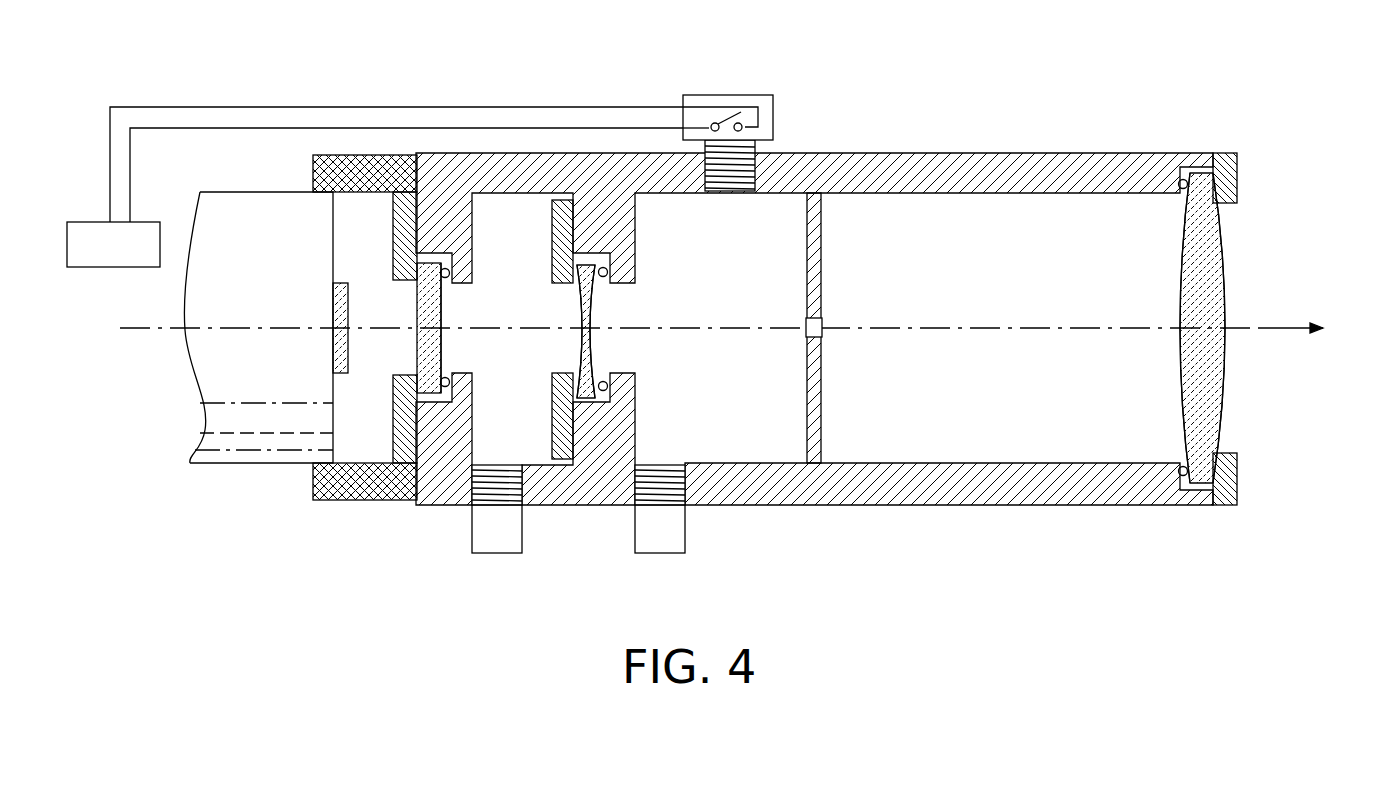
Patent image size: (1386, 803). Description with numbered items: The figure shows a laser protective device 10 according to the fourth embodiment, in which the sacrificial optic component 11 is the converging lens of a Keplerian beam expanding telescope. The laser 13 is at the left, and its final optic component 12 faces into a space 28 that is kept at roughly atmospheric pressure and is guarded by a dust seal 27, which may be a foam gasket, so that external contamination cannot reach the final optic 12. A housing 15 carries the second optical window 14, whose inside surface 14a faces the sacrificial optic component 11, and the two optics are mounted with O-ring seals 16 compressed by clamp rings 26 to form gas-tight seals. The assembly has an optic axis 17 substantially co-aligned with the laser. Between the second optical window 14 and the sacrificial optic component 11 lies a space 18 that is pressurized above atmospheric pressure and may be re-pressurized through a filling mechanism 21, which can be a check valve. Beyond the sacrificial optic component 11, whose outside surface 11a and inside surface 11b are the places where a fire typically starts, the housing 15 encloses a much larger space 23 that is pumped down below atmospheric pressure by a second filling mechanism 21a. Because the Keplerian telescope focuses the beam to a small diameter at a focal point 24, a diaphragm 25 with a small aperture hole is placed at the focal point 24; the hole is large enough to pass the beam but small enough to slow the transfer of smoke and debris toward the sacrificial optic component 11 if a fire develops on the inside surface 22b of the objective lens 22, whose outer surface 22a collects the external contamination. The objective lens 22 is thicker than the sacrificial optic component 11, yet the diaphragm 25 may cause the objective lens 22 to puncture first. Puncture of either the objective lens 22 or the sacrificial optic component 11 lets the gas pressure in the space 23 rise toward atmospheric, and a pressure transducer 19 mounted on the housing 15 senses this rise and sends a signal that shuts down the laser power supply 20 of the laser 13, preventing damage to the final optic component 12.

The laser protective device 10 is at (820, 130).
The sacrificial optic component 11 is at (592, 310).
The outside surface of the sacrificial optic component 11a is at (592, 338).
The inside surface of the sacrificial optic component 11b is at (580, 322).
The final optic component 12 is at (343, 287).
The laser 13 is at (262, 442).
The second optical window 14 is at (420, 292).
The inside surface of the second optical window 14a is at (445, 325).
The housing 15 is at (1125, 160).
The O-ring seals 16 is at (450, 273).
The optic axis 17 is at (1290, 328).
The space 18 is at (484, 232).
The pressure transducer 19 is at (735, 95).
The laser power supply 20 is at (110, 262).
The filling mechanism 21 is at (472, 520).
The second filling mechanism 21a is at (678, 533).
The objective lens 22 is at (1208, 228).
The outer surface of the objective lens 22a is at (1227, 330).
The inside surface of the objective lens 22b is at (1180, 330).
The space 23 is at (859, 413).
The focal point 24 is at (822, 326).
The diaphragm 25 is at (812, 263).
The clamp rings 26 is at (397, 378).
The dust seal 27 is at (315, 172).
The space 28 is at (360, 365).